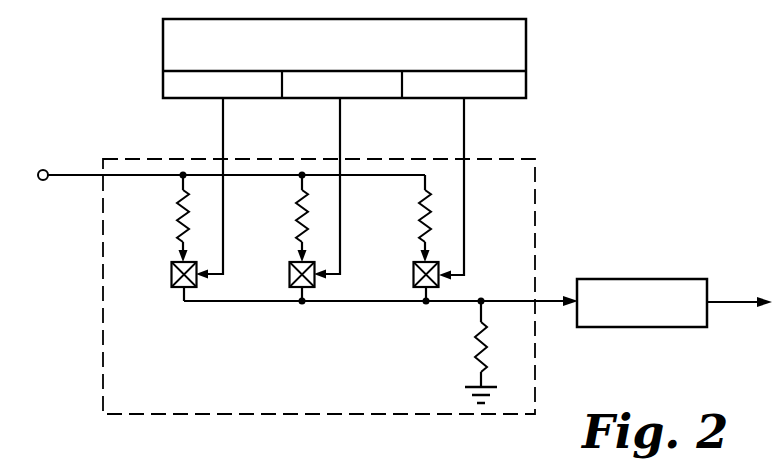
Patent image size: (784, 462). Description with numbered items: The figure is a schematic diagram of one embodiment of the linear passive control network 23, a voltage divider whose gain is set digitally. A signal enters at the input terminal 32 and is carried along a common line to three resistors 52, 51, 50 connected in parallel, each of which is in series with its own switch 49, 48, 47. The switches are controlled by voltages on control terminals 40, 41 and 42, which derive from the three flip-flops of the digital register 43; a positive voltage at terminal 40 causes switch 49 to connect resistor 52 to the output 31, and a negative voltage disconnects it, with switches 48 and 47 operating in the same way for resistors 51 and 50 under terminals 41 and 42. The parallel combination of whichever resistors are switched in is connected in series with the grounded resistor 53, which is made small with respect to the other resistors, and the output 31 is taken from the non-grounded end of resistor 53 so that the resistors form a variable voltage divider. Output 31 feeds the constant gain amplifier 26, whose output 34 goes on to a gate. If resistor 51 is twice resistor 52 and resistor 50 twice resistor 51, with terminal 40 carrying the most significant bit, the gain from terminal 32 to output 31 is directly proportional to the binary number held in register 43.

The linear passive control network 23 is at (537, 196).
The constant gain amplifier 26 is at (612, 283).
The output 31 is at (553, 298).
The input terminal 32 is at (38, 181).
The output of amplifier 34 is at (722, 299).
The control terminal 40 is at (220, 101).
The control terminal 41 is at (338, 101).
The control terminal 42 is at (461, 101).
The digital register 43 is at (515, 62).
The switch 47 is at (413, 276).
The switch 48 is at (289, 275).
The switch 49 is at (171, 275).
The resistor 50 is at (421, 233).
The resistor 51 is at (299, 232).
The resistor 52 is at (178, 198).
The resistor 53 is at (476, 363).